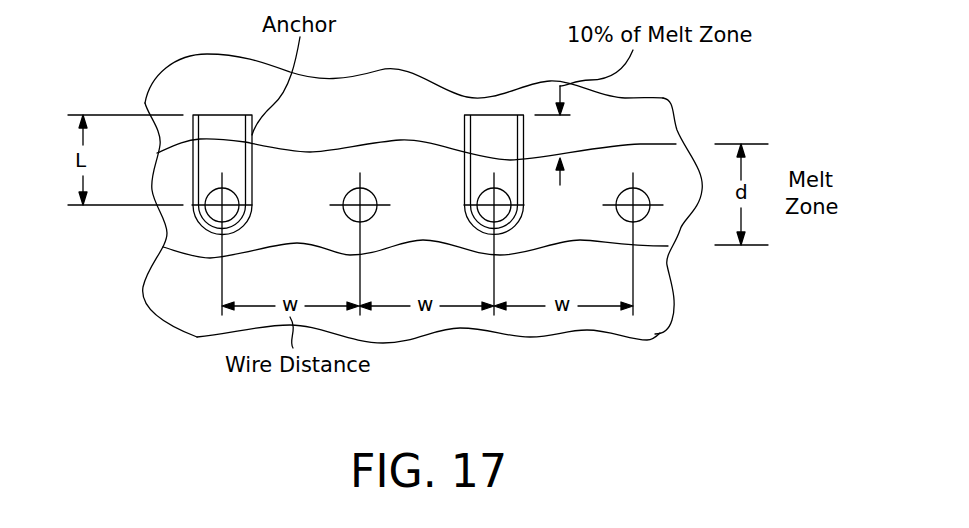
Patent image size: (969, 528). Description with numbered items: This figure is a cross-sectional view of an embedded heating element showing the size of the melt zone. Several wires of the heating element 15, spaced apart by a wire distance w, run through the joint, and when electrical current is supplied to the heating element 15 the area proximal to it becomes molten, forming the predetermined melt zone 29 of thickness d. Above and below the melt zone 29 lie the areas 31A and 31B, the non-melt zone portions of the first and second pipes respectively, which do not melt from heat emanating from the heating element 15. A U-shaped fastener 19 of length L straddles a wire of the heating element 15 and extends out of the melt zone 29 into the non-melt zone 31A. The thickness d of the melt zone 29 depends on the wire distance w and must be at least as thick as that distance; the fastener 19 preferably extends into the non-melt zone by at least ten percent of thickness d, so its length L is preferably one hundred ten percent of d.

The heating element 15 is at (230, 190).
The fastener 19 is at (252, 138).
The melt zone 29 is at (658, 230).
The non-melt zone portion of the first pipe 31A is at (413, 110).
The non-melt zone portion of the second pipe 31B is at (647, 327).